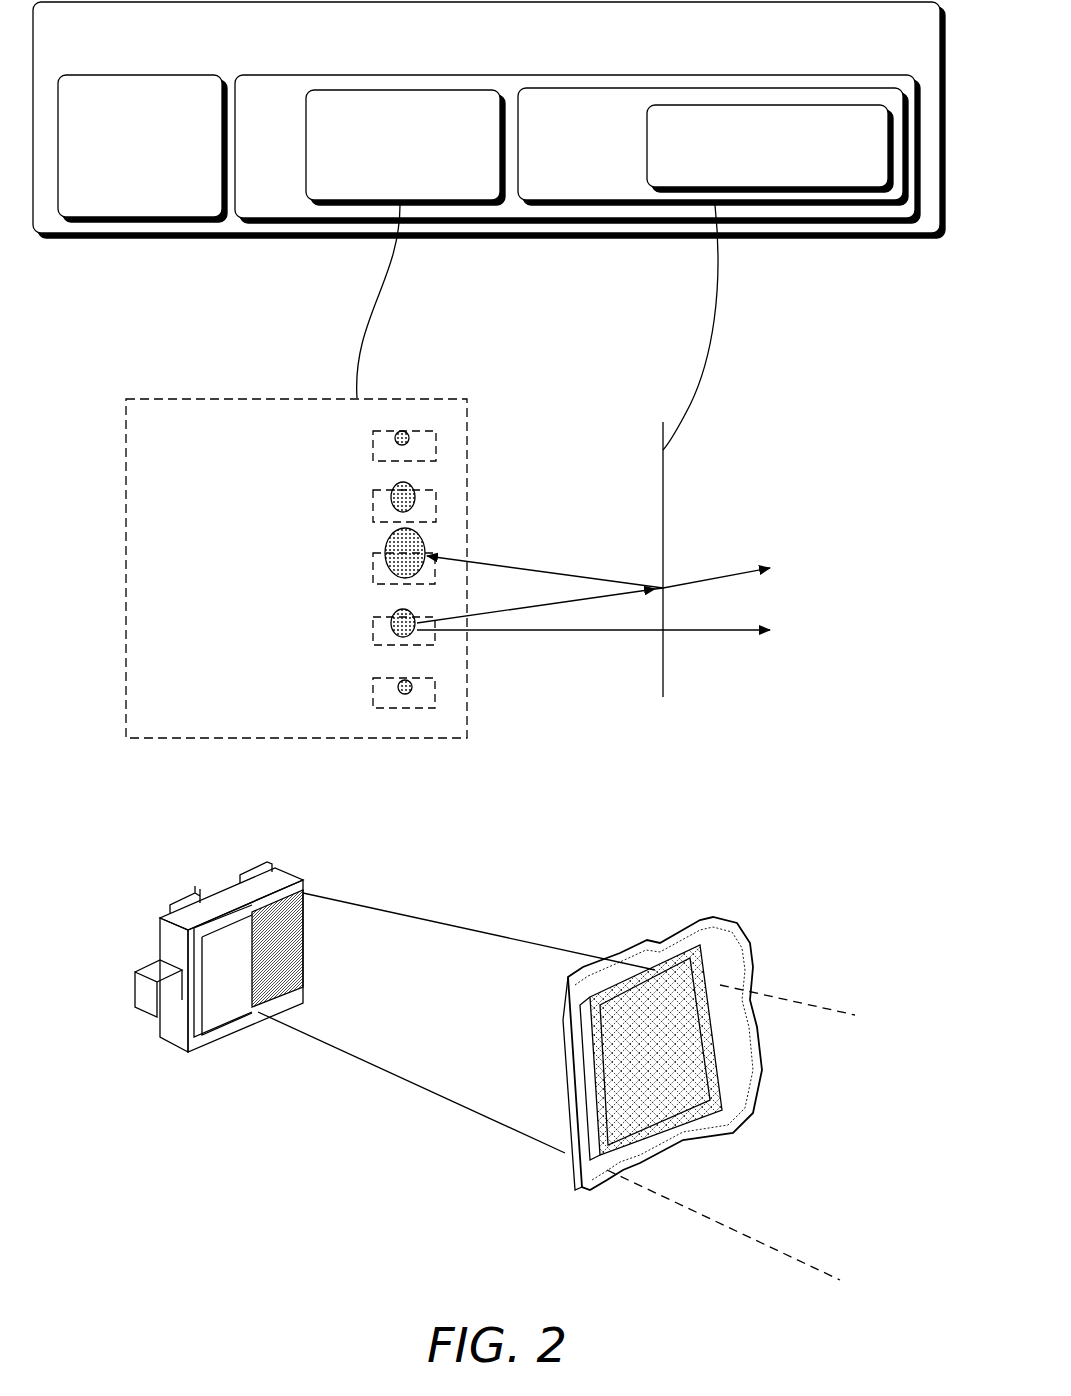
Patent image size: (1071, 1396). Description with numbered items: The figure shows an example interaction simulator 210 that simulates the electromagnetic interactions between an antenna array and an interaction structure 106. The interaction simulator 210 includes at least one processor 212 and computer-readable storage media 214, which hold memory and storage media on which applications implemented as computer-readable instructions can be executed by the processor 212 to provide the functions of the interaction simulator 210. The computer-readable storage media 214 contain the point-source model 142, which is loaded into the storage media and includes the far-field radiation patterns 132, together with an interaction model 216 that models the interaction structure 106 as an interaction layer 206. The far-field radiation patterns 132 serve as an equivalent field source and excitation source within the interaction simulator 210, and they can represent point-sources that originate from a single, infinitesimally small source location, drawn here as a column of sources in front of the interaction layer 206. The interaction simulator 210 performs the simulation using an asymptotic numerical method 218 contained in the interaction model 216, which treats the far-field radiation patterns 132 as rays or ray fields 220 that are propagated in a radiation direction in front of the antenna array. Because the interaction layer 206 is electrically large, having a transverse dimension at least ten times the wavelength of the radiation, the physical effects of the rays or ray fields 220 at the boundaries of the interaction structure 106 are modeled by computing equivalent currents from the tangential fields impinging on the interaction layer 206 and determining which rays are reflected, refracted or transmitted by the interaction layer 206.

The interaction simulator 210 is at (489, 120).
The processor 212 is at (142, 148).
The computer-readable storage media 214 is at (577, 149).
The point-source model 142 is at (405, 244).
The interaction model 216 is at (713, 146).
The asymptotic numerical method 218 is at (770, 277).
The far-field radiation patterns 132 is at (413, 692).
The interaction layer 206 is at (665, 515).
The rays or ray fields 220 is at (537, 634).
The interaction structure 106 is at (710, 915).